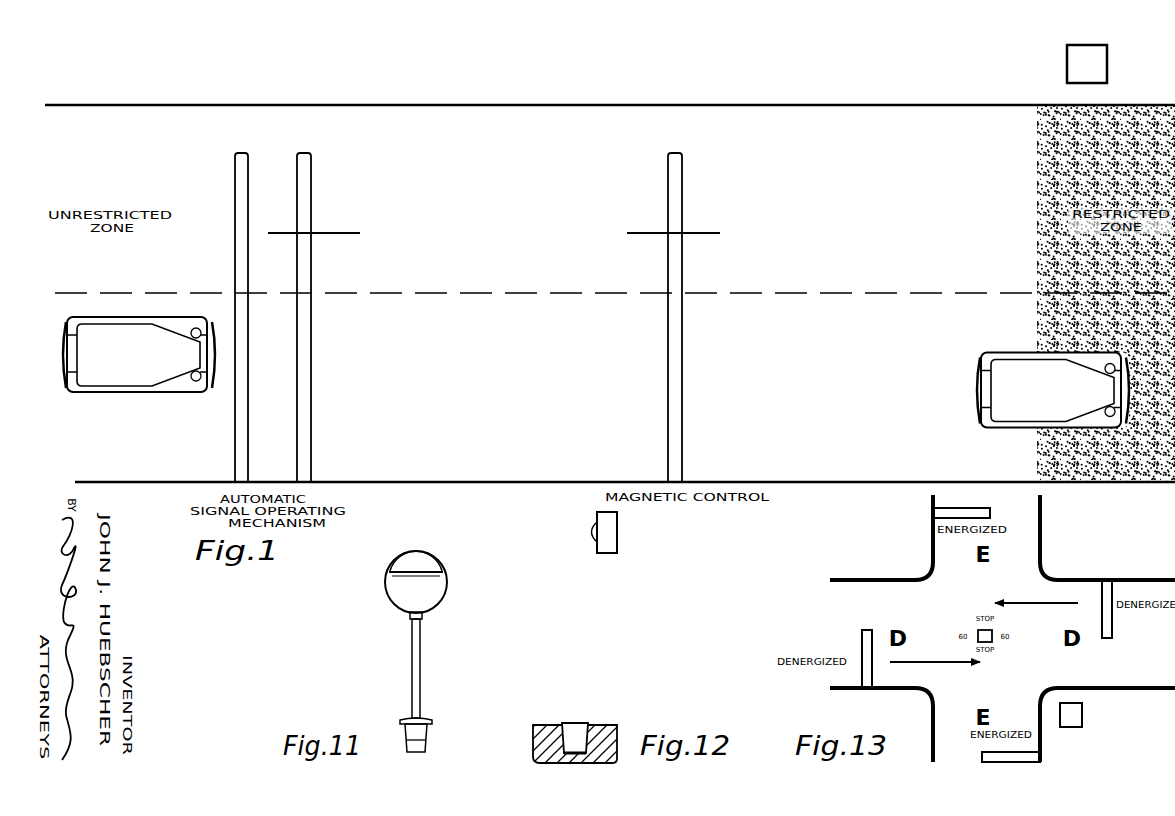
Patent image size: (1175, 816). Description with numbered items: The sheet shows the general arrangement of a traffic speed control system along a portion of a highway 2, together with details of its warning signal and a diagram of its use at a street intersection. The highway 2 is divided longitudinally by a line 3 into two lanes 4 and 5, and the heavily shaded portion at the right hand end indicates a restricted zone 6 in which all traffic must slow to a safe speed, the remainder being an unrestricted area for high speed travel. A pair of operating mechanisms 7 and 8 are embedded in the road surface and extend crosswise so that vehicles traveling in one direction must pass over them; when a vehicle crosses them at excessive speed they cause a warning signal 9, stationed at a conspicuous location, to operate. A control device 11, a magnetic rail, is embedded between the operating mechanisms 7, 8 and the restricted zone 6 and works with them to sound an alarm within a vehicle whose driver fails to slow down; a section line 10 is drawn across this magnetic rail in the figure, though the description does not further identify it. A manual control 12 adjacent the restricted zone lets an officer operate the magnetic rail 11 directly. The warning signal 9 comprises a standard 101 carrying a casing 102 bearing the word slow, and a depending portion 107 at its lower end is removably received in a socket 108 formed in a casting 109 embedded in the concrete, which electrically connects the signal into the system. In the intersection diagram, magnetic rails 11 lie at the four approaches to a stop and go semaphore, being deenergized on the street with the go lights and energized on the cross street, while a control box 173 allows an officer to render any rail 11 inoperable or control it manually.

In FIG. 1, the highway 2 is at (513, 97).
In FIG. 1, the line 3 is at (470, 294).
In FIG. 1, the lane 4 is at (842, 117).
In FIG. 1, the lane 5 is at (858, 470).
In FIG. 1, the restricted zone 6 is at (1140, 470).
In FIG. 1, the operating mechanism 7 is at (241, 147).
In FIG. 1, the operating mechanism 8 is at (306, 147).
In FIG. 1, the warning signal 9 is at (590, 537).
In FIG. 11, the warning signal 9 is at (433, 553).
In FIG. 1, the magnetic control line 10 is at (672, 235).
In FIG. 1, the control device 11 is at (680, 147).
In FIG. 13, the control device 11 is at (985, 506).
In FIG. 1, the manual control 12 is at (1062, 64).
In FIG. 11, the standard 101 is at (421, 663).
In FIG. 11, the casing 102 is at (388, 595).
In FIG. 11, the depending portion 107 is at (432, 735).
In FIG. 12, the socket 108 is at (578, 730).
In FIG. 12, the casting 109 is at (556, 752).
In FIG. 13, the control box 173 is at (1078, 718).